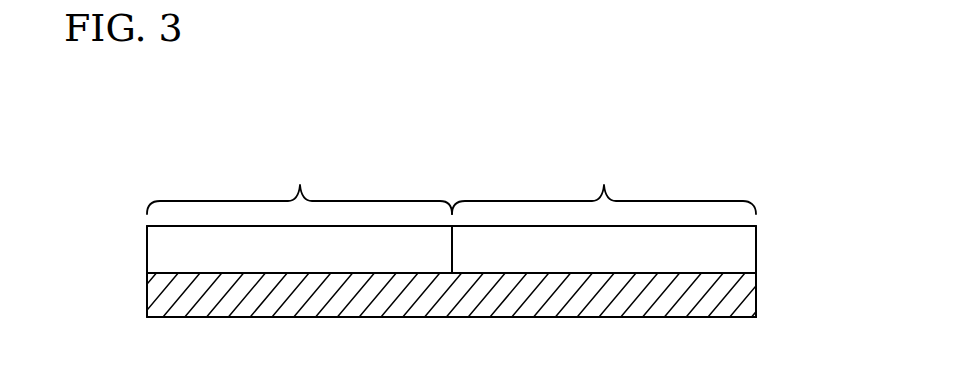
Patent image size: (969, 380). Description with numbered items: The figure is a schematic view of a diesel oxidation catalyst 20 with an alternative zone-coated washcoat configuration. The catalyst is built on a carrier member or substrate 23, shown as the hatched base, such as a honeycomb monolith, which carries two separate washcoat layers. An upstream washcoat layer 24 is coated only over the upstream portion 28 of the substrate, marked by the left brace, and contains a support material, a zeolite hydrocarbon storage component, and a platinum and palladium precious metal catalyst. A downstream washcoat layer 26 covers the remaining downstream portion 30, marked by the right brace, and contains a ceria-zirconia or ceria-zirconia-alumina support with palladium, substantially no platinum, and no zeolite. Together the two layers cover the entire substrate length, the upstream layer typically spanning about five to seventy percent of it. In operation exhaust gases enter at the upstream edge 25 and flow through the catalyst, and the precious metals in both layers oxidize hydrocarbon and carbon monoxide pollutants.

The diesel oxidation catalyst 20 is at (601, 105).
The carrier layer (hatched base) 23 is at (157, 297).
The upstream washcoat layer 24 is at (157, 253).
The upstream edge 25 is at (757, 273).
The downstream washcoat layer 26 is at (742, 253).
The first region 28 is at (299, 187).
The downstream portion 30 is at (604, 187).